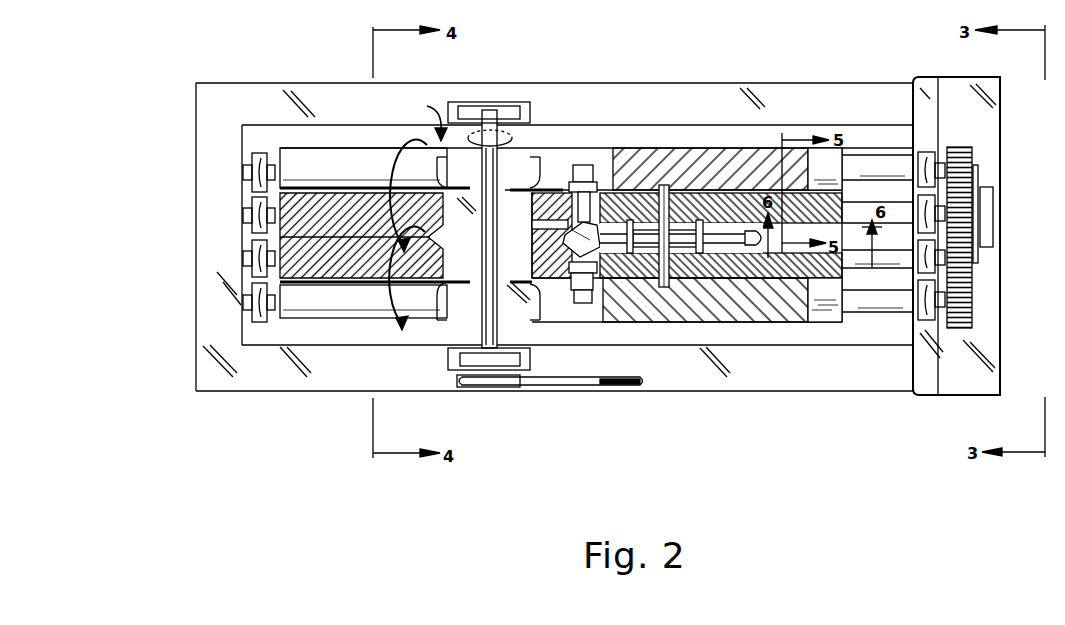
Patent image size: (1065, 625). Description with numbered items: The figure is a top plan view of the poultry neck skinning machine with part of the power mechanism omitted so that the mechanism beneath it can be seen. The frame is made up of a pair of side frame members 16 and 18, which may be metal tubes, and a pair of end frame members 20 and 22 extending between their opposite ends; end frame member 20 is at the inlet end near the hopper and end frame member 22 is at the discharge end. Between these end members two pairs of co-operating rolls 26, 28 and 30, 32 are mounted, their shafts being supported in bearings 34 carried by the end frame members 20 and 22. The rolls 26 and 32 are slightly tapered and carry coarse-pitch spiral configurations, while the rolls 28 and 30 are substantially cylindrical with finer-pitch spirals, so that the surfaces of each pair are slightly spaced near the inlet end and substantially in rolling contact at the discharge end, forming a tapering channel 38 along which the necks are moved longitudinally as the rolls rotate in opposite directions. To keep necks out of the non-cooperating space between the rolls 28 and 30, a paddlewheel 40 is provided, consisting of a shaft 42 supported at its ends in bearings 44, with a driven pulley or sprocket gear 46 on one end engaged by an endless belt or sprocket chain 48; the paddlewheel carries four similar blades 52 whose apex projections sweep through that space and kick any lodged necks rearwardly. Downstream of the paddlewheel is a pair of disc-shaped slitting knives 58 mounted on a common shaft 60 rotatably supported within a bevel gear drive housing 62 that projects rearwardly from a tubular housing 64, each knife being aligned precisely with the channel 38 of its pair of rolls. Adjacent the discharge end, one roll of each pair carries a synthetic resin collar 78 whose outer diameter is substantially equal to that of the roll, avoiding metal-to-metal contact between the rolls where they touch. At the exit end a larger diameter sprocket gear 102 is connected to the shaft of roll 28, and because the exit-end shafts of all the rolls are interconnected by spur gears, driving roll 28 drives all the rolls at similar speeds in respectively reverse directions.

The side frame member 16 is at (648, 80).
The side frame member 18 is at (767, 380).
The end frame member 20 is at (203, 322).
The end frame member 22 is at (928, 384).
The roll 26 is at (298, 163).
The roll 28 is at (372, 205).
The roll 30 is at (348, 266).
The roll 32 is at (404, 304).
The bearing blocks 34 is at (252, 158).
The channel 38 is at (323, 190).
The paddlewheel 40 is at (423, 120).
The shaft 42 is at (495, 337).
The bearings 44 is at (527, 112).
The driven pulley or sprocket gear 46 is at (527, 378).
The endless belt or sprocket chain 48 is at (597, 380).
The blades 52 is at (469, 241).
The slitting knives 58 is at (568, 190).
The common shaft 60 is at (585, 296).
The bevel gear drive housing 62 is at (616, 190).
The tubular housing 64 is at (740, 226).
The collar 78 is at (843, 155).
The sprocket gear 102 is at (978, 170).